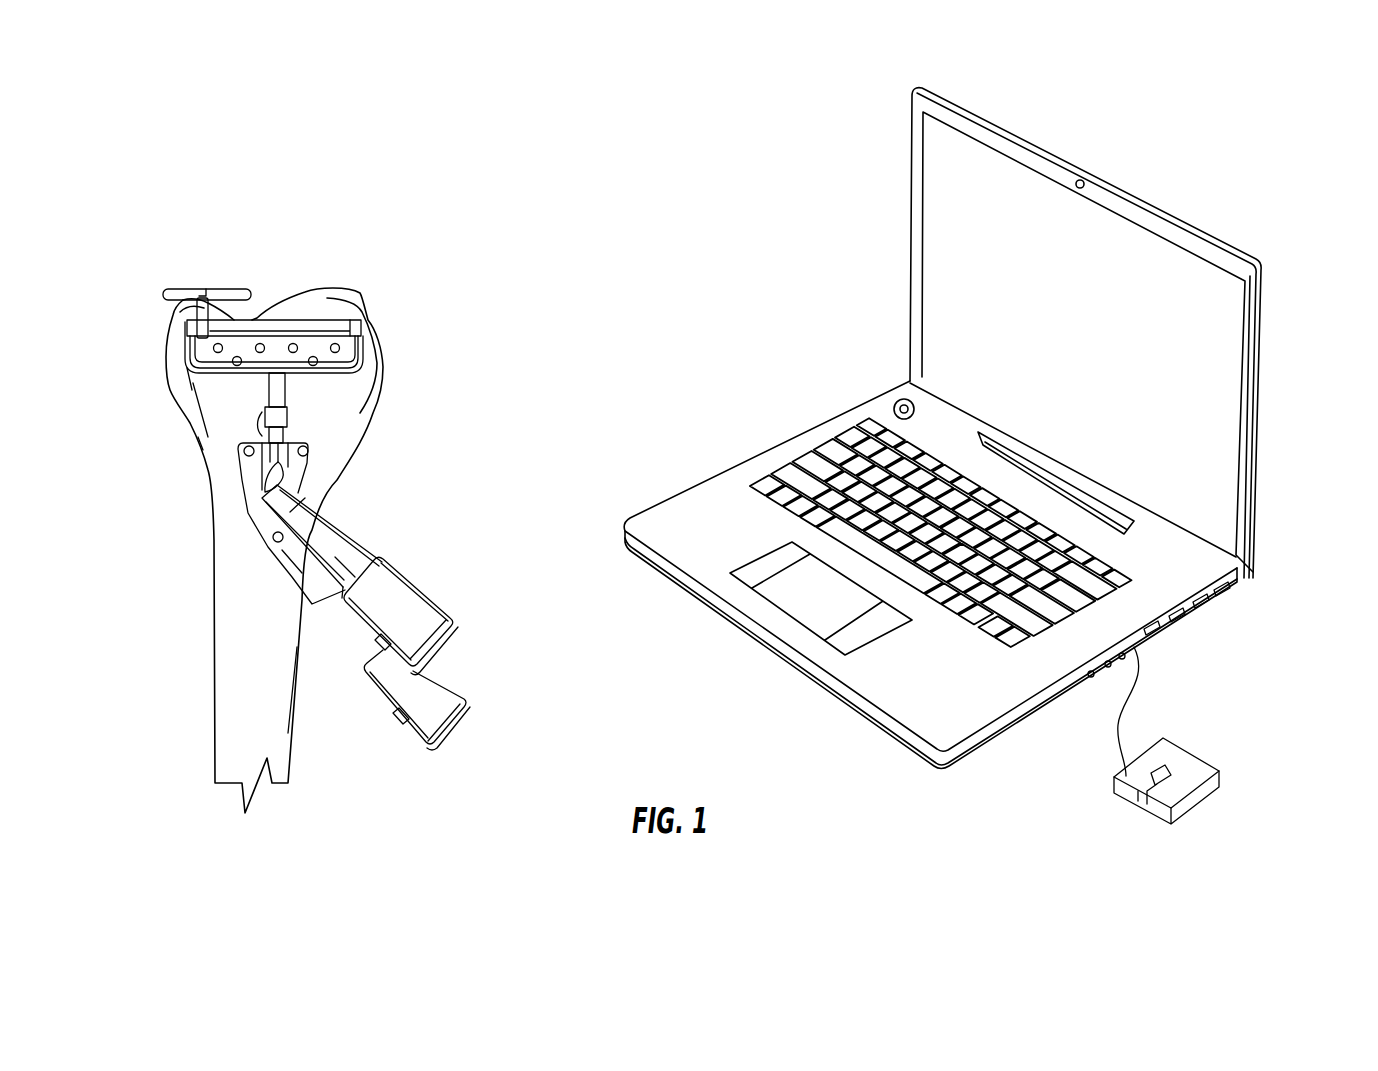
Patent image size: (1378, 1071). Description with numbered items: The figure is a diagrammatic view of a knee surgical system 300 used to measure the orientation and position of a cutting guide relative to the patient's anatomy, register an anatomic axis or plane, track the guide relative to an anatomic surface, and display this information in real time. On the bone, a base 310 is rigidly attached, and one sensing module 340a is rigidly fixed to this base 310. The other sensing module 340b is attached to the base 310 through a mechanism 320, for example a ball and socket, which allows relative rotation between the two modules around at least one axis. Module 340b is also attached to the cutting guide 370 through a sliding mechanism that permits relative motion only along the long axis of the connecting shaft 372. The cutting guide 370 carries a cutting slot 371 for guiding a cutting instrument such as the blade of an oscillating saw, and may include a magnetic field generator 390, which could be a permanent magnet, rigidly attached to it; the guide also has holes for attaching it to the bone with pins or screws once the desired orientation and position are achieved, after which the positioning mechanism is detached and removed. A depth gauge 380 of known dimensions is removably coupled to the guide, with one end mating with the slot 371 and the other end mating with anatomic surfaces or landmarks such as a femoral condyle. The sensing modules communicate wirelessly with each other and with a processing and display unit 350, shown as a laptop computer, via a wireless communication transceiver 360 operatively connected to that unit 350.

The knee surgical system 300 is at (735, 203).
The base 310 is at (256, 521).
The mechanism 320 is at (302, 503).
The sensing module 340a is at (467, 683).
The sensing module 340b is at (455, 589).
The processing and display unit 350 is at (1263, 395).
The wireless communication transceiver 360 is at (1188, 748).
The cutting guide 370 is at (366, 348).
The cutting slot 371 is at (333, 330).
The connecting shaft 372 is at (282, 390).
The depth gauge 380 is at (211, 286).
The magnetic field generator 390 is at (289, 417).